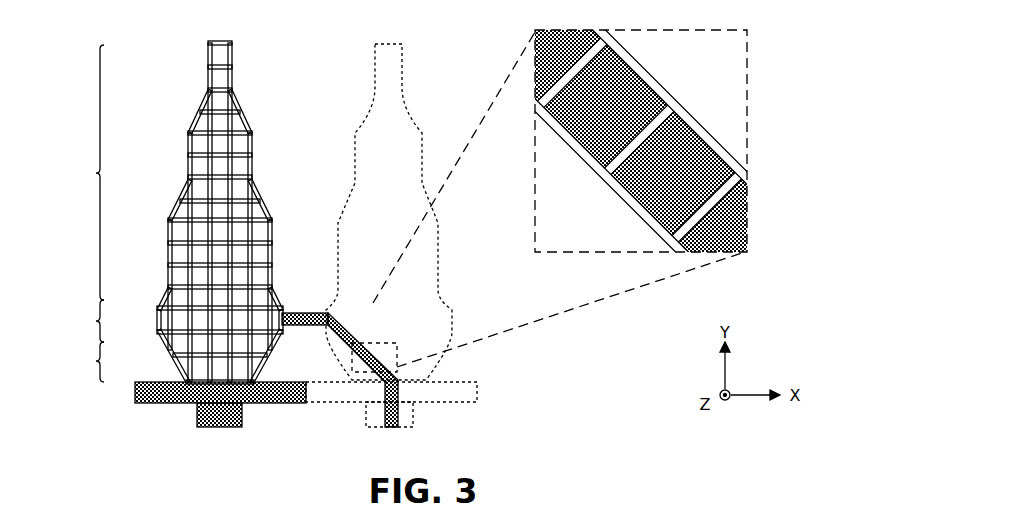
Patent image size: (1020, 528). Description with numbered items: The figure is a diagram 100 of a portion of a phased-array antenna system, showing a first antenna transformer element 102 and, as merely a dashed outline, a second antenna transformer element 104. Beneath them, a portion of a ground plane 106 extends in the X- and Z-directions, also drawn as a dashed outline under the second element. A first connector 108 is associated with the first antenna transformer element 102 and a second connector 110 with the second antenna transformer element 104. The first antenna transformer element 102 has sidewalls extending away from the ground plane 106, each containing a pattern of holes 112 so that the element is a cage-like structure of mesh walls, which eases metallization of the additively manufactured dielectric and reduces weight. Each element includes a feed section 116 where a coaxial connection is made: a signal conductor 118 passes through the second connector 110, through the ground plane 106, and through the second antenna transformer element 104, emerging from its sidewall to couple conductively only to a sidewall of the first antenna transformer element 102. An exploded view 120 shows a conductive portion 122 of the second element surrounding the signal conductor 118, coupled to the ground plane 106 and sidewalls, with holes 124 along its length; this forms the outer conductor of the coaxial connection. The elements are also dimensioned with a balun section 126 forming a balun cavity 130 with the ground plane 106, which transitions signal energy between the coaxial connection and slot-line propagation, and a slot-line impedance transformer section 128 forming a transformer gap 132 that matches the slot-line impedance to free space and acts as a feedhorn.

The diagram 100 is at (117, 29).
The first antenna transformer element 102 is at (237, 62).
The second antenna transformer element 104 is at (363, 108).
The ground plane 106 is at (167, 382).
The first connector 108 is at (200, 427).
The second connector 110 is at (370, 428).
The holes 112 is at (220, 80).
The feed section 116 is at (60, 330).
The signal conductor 118 is at (328, 312).
The exploded view 120 is at (747, 95).
The conductive portion 122 is at (652, 78).
The holes 124 is at (648, 105).
The balun section 126 is at (60, 370).
The slot-line impedance transformer section 128 is at (60, 182).
The balun cavity 130 is at (290, 366).
The transformer gap 132 is at (290, 164).